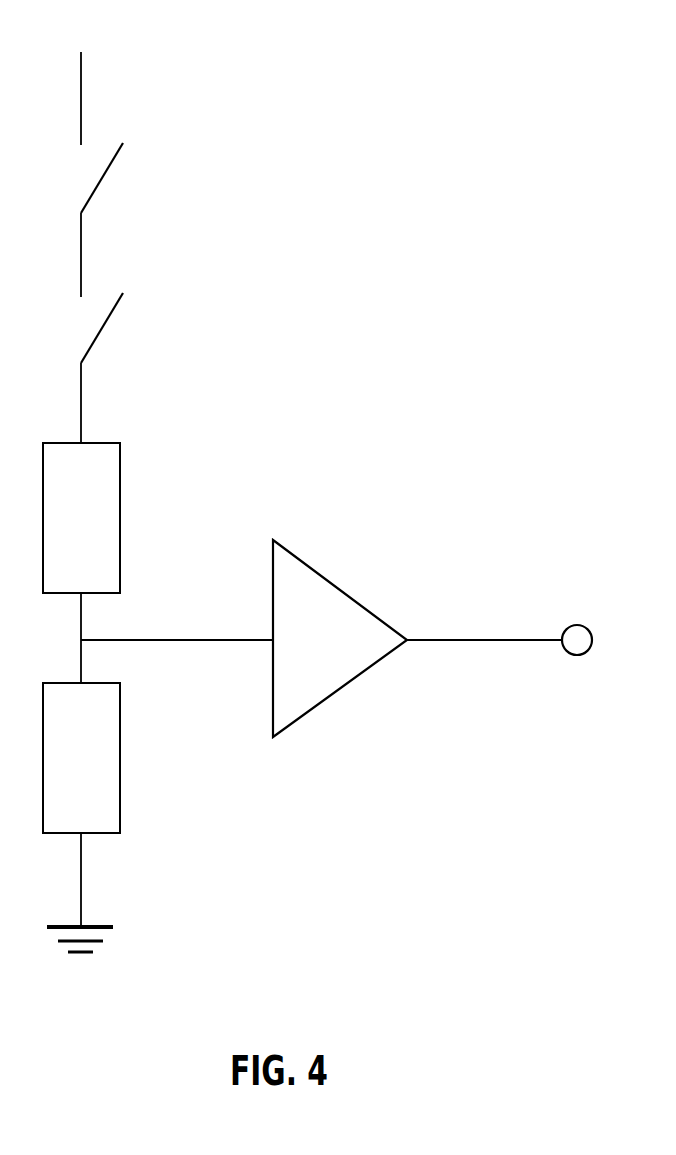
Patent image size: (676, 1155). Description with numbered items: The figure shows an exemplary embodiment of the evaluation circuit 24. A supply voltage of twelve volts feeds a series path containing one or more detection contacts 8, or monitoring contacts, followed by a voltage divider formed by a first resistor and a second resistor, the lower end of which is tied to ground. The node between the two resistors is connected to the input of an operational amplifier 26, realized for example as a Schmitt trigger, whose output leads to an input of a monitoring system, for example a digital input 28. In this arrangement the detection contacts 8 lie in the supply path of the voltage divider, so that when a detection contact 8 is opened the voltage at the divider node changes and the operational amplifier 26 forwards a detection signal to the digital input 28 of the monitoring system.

The detection contact 8 is at (115, 310).
The evaluation circuit 24 is at (408, 313).
The operational amplifier 26 is at (325, 580).
The digital input 28 is at (575, 625).